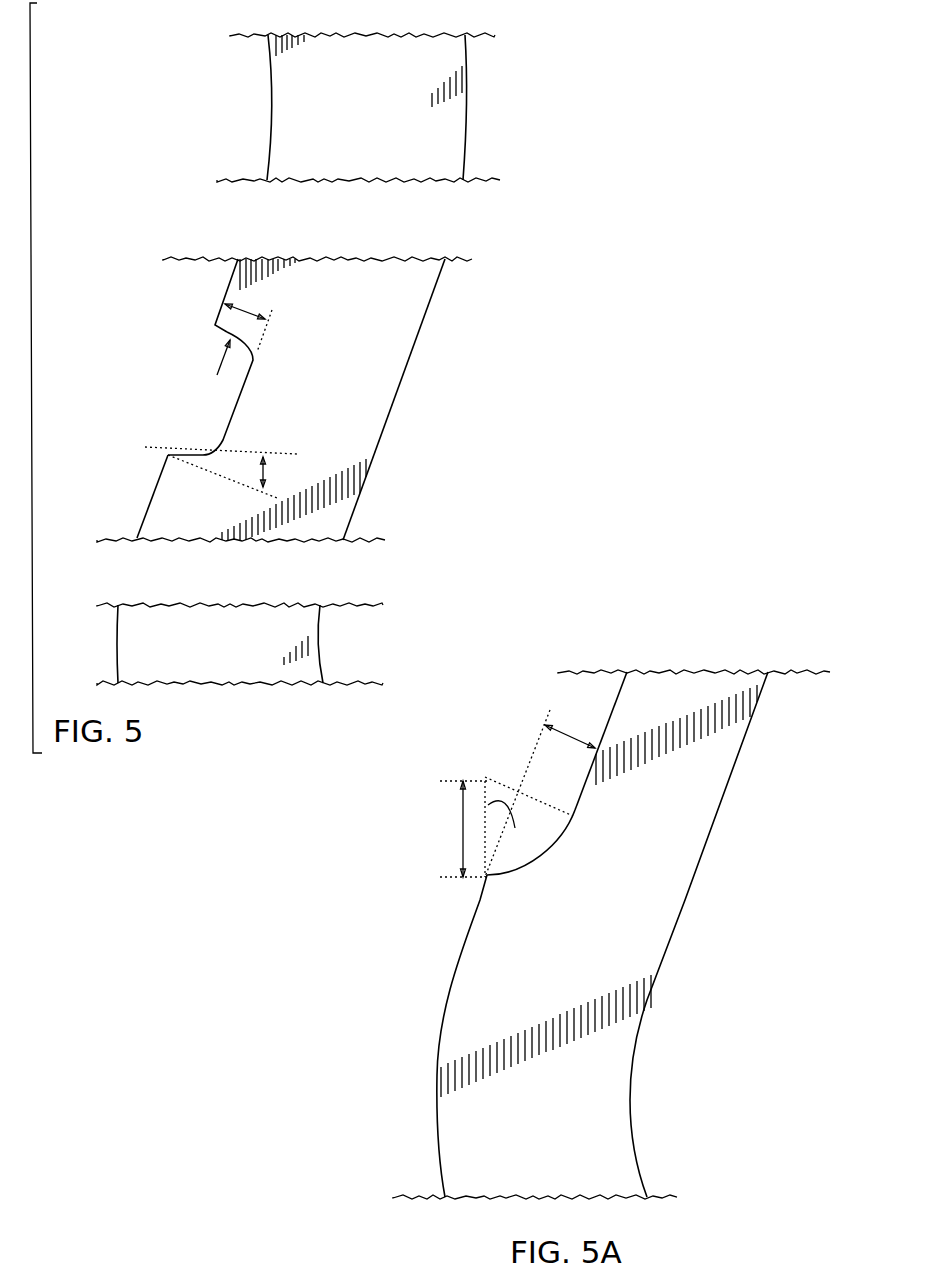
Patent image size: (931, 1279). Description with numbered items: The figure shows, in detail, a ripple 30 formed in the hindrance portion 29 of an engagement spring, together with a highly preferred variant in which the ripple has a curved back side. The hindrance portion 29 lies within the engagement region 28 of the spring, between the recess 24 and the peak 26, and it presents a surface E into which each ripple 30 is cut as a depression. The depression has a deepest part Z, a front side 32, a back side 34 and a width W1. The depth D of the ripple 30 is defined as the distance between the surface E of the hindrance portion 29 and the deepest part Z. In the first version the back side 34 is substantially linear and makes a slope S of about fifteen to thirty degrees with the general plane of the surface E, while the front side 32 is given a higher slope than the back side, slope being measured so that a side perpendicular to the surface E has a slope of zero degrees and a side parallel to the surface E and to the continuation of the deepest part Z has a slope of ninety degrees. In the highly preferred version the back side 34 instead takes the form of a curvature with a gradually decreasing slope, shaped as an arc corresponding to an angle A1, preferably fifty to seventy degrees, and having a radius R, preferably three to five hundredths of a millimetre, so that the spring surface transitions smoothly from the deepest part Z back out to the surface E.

In FIG. 5, the recess 24 is at (272, 98).
In FIG. 5, the peak 26 is at (118, 640).
In FIG. 5, the engagement region 28 is at (336, 399).
In FIG. 5A, the engagement region 28 is at (611, 934).
In FIG. 5, the hindrance portion 29 is at (387, 368).
In FIG. 5A, the hindrance portion 29 is at (708, 787).
In FIG. 5, the ripple 30 is at (202, 357).
In FIG. 5A, the ripple 30 is at (557, 790).
In FIG. 5, the front side 32 is at (227, 333).
In FIG. 5, the back side 34 is at (180, 453).
In FIG. 5A, the back side 34 is at (520, 862).
In FIG. 5, the depth D is at (243, 311).
In FIG. 5A, the depth D is at (540, 793).
In FIG. 5, the surface E is at (152, 488).
In FIG. 5A, the surface E is at (468, 928).
In FIG. 5, the deepest part Z is at (240, 400).
In FIG. 5A, the deepest part Z is at (577, 805).
In FIG. 5, the width W1 is at (211, 373).
In FIG. 5, the slope S is at (221, 472).
In FIG. 5A, the radius R is at (465, 829).
In FIG. 5A, the angle A1 is at (516, 824).